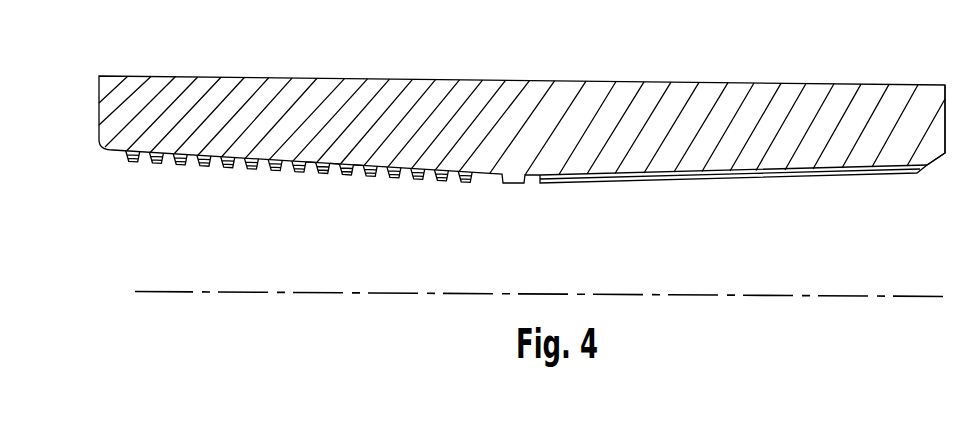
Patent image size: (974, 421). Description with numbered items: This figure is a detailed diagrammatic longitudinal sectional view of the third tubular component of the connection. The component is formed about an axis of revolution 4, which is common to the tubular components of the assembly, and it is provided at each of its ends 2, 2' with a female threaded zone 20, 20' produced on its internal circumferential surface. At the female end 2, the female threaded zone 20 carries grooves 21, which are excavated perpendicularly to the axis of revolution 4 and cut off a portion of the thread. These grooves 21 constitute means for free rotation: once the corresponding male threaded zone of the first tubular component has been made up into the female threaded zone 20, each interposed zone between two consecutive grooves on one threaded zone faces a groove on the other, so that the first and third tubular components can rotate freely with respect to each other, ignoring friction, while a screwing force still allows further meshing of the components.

The end of third tubular component 2 is at (522, 100).
The end of third tubular component 2' is at (892, 100).
The female threaded zone 20 is at (299, 195).
The female threaded zone 20' is at (733, 204).
The grooves 21 is at (311, 172).
The axis of revolution 4 is at (224, 293).